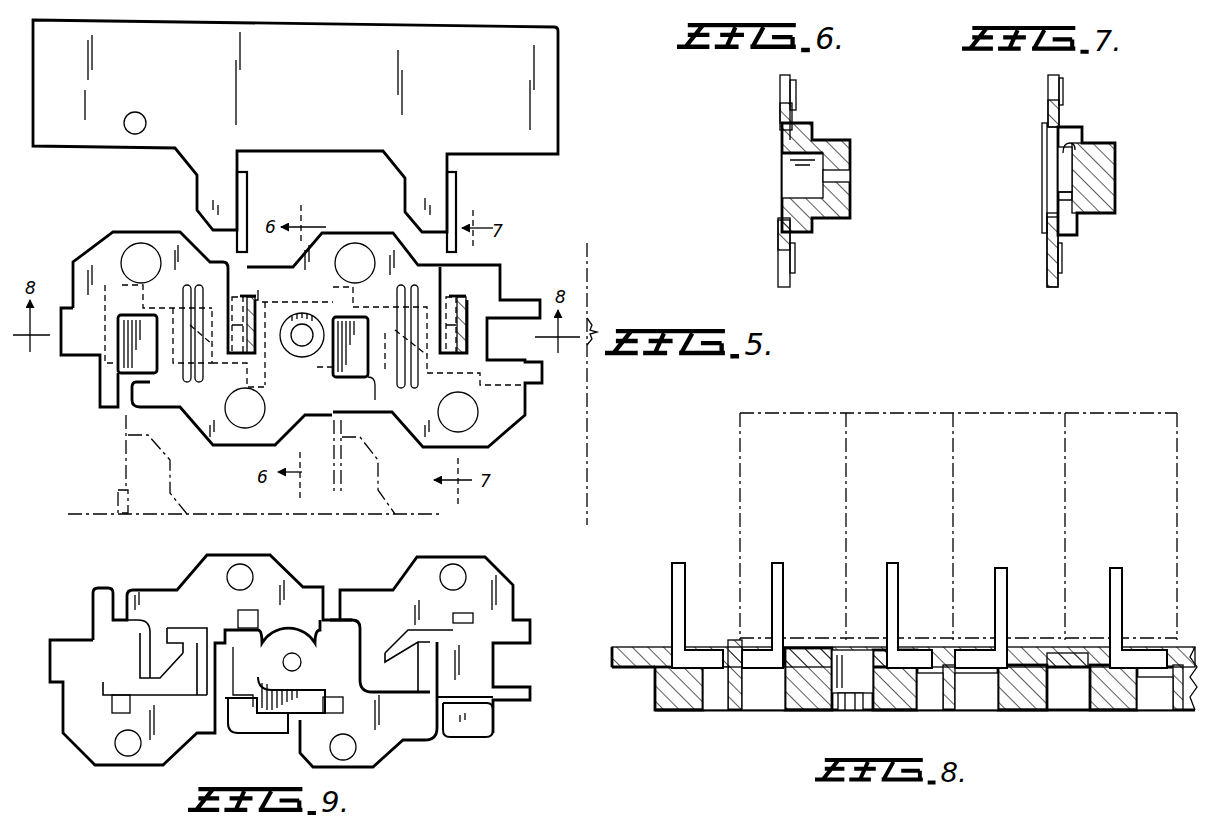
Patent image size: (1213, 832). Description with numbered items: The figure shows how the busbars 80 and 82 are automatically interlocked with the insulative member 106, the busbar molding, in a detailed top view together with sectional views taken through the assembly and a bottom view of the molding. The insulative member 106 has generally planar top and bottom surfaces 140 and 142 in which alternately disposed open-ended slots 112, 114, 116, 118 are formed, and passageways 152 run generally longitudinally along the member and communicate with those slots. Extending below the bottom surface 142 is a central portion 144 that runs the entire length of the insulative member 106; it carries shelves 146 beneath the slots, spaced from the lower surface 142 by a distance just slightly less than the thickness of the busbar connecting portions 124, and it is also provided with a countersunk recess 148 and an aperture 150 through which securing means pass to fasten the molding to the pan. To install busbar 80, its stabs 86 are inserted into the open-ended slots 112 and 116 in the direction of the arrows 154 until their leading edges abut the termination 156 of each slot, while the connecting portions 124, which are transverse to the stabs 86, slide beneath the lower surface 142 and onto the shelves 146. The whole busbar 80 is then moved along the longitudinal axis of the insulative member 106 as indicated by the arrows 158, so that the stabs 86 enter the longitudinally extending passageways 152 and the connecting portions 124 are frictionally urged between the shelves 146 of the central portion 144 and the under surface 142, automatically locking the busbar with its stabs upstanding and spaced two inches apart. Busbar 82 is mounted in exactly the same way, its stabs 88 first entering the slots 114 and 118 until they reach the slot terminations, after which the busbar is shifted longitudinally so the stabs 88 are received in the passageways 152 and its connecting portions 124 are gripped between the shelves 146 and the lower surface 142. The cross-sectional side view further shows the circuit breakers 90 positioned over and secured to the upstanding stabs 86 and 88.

In FIG. 5, the busbar 80 is at (322, 84).
In FIG. 5, the busbar 82 is at (165, 525).
In FIG. 5, the stabs 86 is at (248, 191).
In FIG. 8, the stabs 86 is at (784, 588).
In FIG. 5, the stabs 88 is at (121, 446).
In FIG. 8, the stabs 88 is at (686, 588).
In FIG. 8, the circuit breakers 90 is at (818, 474).
In FIG. 8, the insulative member 106 is at (1165, 648).
In FIG. 5, the open-ended slot 112 is at (460, 265).
In FIG. 5, the open-ended slot 114 is at (338, 385).
In FIG. 5, the open-ended slot 116 is at (237, 279).
In FIG. 5, the open-ended slot 118 is at (126, 381).
In FIG. 5, the busbar connecting portions 124 is at (210, 183).
In FIG. 8, the busbar connecting portions 124 is at (968, 730).
In FIG. 5, the top surface 140 is at (97, 237).
In FIG. 6, the top surface 140 is at (781, 112).
In FIG. 7, the top surface 140 is at (1049, 114).
In FIG. 8, the top surface 140 is at (657, 650).
In FIG. 6, the bottom surface 142 is at (794, 120).
In FIG. 7, the bottom surface 142 is at (1061, 122).
In FIG. 8, the bottom surface 142 is at (640, 668).
In FIG. 9, the bottom surface 142 is at (433, 618).
In FIG. 6, the central portion 144 is at (852, 203).
In FIG. 7, the central portion 144 is at (1117, 178).
In FIG. 8, the central portion 144 is at (890, 712).
In FIG. 9, the central portion 144 is at (188, 636).
In FIG. 7, the shelves 146 is at (1074, 148).
In FIG. 8, the shelves 146 is at (697, 672).
In FIG. 5, the countersunk recess 148 is at (300, 357).
In FIG. 6, the countersunk recess 148 is at (787, 183).
In FIG. 8, the countersunk recess 148 is at (852, 660).
In FIG. 5, the aperture 150 is at (305, 358).
In FIG. 6, the aperture 150 is at (852, 174).
In FIG. 8, the aperture 150 is at (840, 700).
In FIG. 9, the aperture 150 is at (302, 662).
In FIG. 5, the passageways 152 is at (172, 388).
In FIG. 5, the arrows 154 is at (241, 256).
In FIG. 5, the termination 156 is at (226, 358).
In FIG. 5, the arrows 158 is at (256, 312).